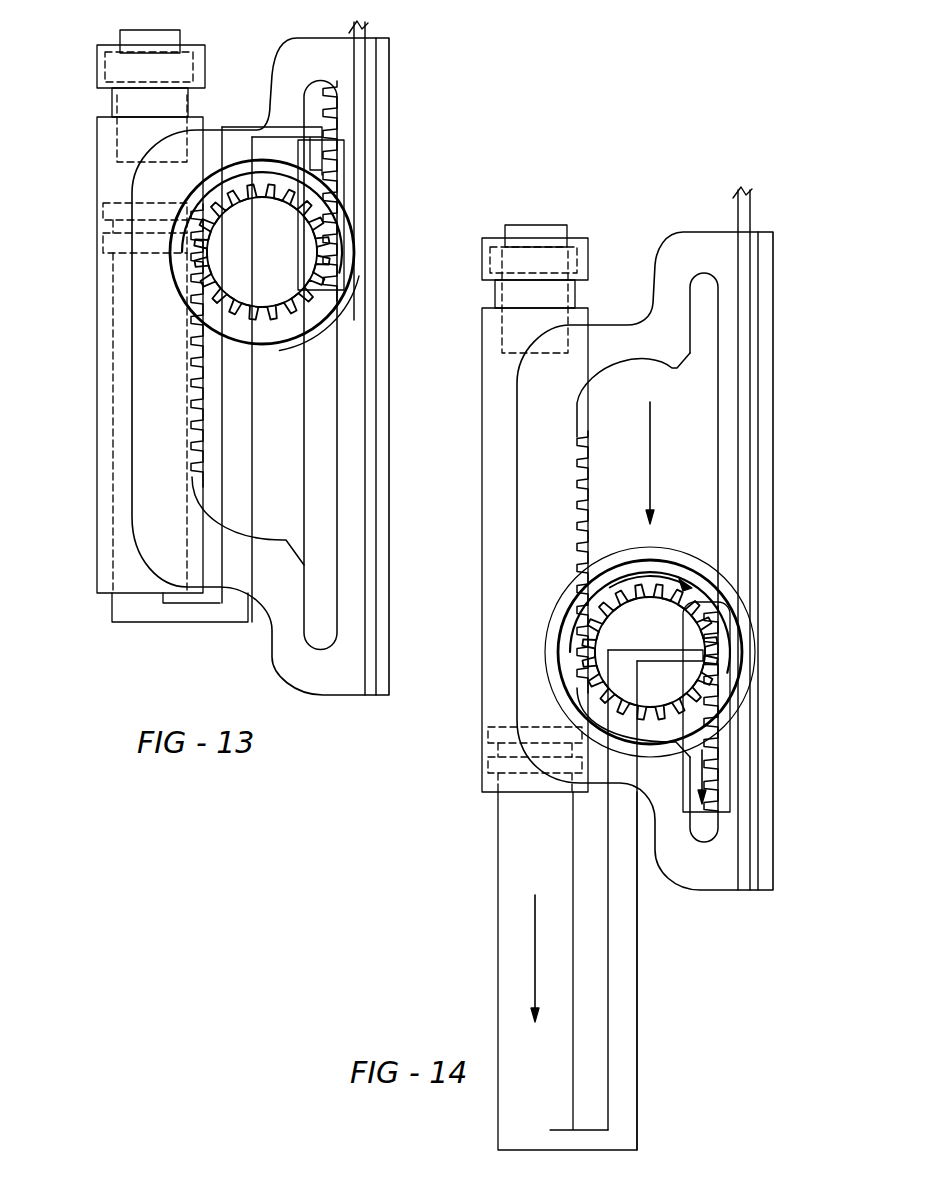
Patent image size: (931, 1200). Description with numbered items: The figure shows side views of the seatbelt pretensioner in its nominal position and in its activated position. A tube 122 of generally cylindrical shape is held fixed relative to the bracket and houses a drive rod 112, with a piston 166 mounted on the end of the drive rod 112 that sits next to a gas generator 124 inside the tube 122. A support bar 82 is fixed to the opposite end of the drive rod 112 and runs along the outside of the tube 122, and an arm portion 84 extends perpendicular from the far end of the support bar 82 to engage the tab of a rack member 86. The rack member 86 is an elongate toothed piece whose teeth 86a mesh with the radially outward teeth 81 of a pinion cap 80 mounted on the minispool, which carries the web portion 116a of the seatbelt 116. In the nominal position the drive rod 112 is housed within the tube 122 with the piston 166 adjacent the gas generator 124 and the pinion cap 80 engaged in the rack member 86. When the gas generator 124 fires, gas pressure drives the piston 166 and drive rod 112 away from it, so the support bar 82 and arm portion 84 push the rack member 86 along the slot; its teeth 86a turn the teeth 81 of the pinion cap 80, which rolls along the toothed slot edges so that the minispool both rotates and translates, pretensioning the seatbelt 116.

In FIG. 13, the pinion cap 80 is at (280, 250).
In FIG. 14, the pinion cap 80 is at (649, 651).
In FIG. 13, the teeth 81 is at (333, 318).
In FIG. 14, the teeth 81 is at (650, 652).
In FIG. 13, the support bar 82 is at (252, 466).
In FIG. 14, the support bar 82 is at (637, 1042).
In FIG. 13, the arm portion 84 is at (278, 133).
In FIG. 14, the arm portion 84 is at (665, 655).
In FIG. 13, the rack member 86 is at (318, 92).
In FIG. 14, the rack member 86 is at (710, 802).
In FIG. 13, the teeth 86a is at (330, 118).
In FIG. 14, the teeth 86a is at (711, 708).
In FIG. 13, the drive rod 112 is at (96, 437).
In FIG. 14, the drive rod 112 is at (498, 983).
In FIG. 13, the seatbelt 116 is at (358, 80).
In FIG. 14, the seatbelt 116 is at (750, 353).
In FIG. 13, the web portion 116a is at (357, 283).
In FIG. 14, the web portion 116a is at (652, 556).
In FIG. 13, the tube 122 is at (96, 196).
In FIG. 14, the tube 122 is at (483, 627).
In FIG. 13, the gas generator 124 is at (140, 102).
In FIG. 14, the gas generator 124 is at (536, 293).
In FIG. 13, the piston 166 is at (105, 246).
In FIG. 14, the piston 166 is at (496, 767).